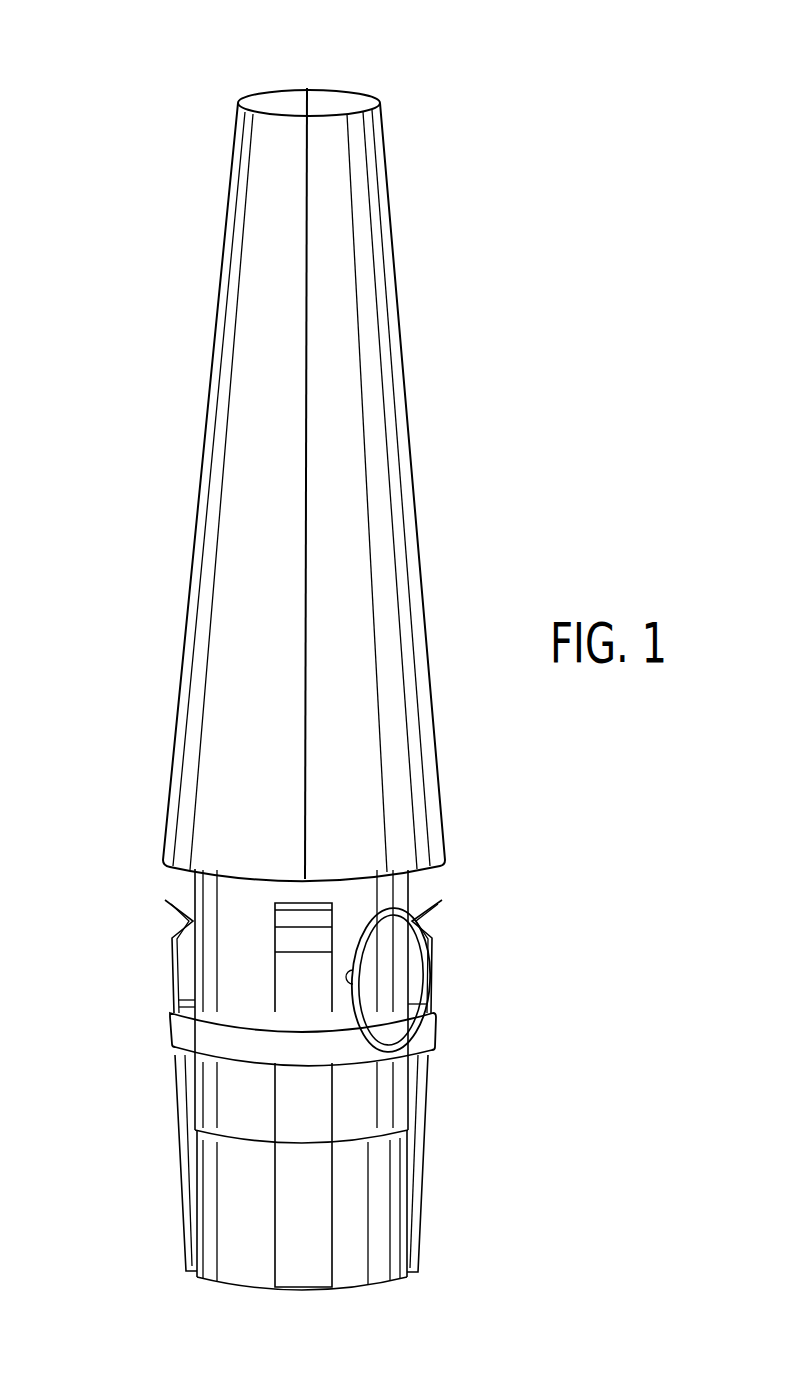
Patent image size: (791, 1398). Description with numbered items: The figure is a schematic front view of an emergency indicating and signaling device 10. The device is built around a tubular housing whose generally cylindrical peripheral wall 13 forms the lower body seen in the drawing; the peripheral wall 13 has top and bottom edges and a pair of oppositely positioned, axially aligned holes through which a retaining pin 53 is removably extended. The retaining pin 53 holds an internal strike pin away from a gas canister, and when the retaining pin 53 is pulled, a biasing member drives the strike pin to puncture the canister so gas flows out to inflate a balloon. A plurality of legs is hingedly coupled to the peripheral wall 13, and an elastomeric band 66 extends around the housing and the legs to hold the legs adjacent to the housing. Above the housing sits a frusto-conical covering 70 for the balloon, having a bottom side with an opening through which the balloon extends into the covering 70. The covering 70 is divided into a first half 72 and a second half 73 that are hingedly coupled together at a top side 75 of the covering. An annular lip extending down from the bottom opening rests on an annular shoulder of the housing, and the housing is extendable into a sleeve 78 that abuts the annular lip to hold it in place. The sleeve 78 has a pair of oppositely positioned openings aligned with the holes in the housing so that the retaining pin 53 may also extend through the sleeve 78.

The emergency indicating and signaling device 10 is at (140, 978).
The peripheral wall 13 is at (355, 1187).
The retaining pin 53 is at (415, 915).
The elastomeric band 66 is at (192, 1038).
The covering 70 is at (472, 276).
The first half 72 is at (223, 492).
The second half 73 is at (395, 533).
The top side 75 is at (330, 102).
The sleeve 78 is at (205, 889).